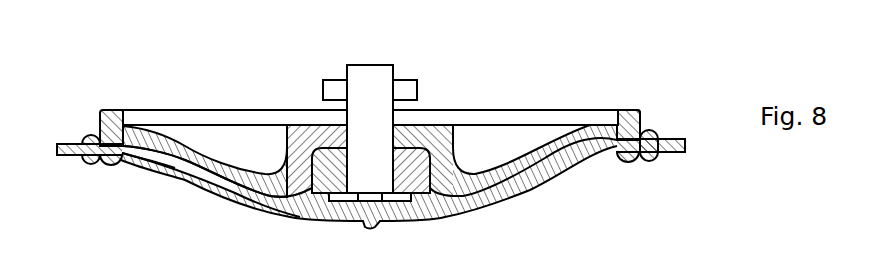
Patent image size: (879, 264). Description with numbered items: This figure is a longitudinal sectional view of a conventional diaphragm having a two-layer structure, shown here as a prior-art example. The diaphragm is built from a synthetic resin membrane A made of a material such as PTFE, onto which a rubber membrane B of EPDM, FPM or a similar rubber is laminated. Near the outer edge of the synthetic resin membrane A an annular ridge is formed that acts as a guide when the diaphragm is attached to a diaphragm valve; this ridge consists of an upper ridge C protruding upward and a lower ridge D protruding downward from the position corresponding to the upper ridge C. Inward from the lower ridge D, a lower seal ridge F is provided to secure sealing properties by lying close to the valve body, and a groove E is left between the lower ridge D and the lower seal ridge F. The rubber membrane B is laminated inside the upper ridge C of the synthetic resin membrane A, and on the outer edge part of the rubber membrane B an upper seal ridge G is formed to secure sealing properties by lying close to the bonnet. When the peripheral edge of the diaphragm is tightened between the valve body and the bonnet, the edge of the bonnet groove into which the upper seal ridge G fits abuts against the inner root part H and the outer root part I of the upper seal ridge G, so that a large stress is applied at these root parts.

The synthetic resin membrane A is at (685, 147).
The rubber membrane B is at (638, 109).
The upper ridge C is at (99, 137).
The lower ridge D is at (93, 164).
The groove E is at (107, 165).
The lower seal ridge F is at (122, 164).
The upper seal ridge G is at (112, 111).
The inner root part H is at (127, 127).
The outer root part I is at (99, 138).